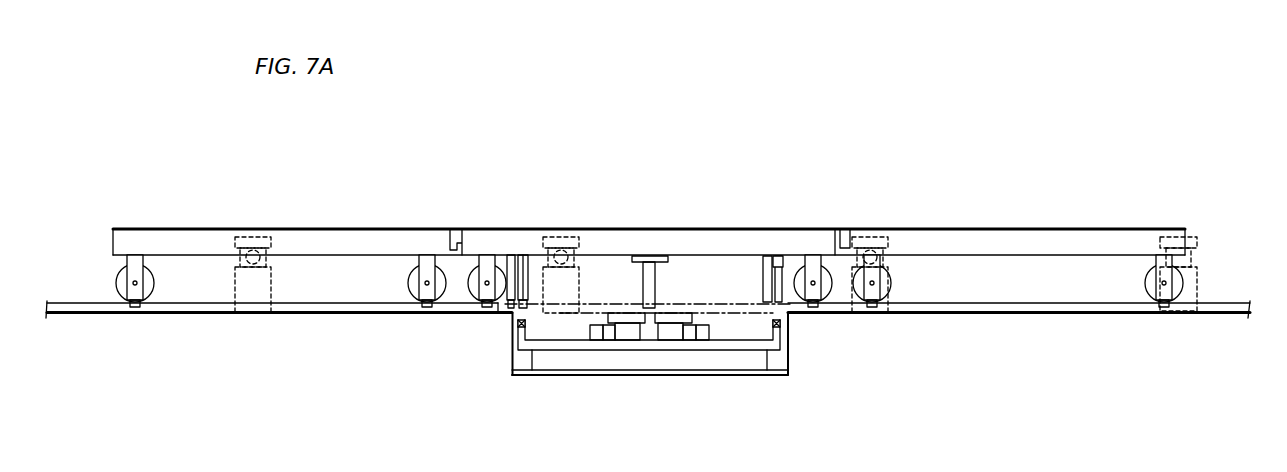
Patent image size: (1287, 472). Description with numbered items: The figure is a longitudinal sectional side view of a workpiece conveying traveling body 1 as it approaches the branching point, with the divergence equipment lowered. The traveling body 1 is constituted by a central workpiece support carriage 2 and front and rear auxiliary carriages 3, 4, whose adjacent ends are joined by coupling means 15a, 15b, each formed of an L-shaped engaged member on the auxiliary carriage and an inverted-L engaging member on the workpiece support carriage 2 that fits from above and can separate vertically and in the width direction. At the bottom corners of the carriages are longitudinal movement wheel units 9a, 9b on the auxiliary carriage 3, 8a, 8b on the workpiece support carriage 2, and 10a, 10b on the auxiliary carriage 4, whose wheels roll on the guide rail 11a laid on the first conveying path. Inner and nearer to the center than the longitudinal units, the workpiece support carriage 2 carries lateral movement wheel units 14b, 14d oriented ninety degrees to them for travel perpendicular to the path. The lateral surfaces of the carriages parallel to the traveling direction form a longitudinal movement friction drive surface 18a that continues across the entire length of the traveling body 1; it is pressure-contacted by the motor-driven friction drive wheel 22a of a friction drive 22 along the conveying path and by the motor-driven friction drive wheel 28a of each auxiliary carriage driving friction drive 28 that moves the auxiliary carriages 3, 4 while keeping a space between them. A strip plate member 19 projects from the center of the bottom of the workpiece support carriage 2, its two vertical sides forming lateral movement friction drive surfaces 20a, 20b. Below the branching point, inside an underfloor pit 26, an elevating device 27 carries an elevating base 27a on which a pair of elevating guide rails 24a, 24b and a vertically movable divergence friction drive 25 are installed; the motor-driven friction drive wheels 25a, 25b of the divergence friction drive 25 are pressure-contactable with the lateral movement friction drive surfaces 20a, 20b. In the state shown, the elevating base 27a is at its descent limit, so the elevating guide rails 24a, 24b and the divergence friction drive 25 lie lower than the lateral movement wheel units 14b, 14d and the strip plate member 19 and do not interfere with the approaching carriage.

The workpiece conveying traveling body 1 is at (729, 229).
The workpiece support carriage 2 is at (802, 229).
The auxiliary carriage 3 is at (356, 229).
The auxiliary carriage 4 is at (1013, 229).
The longitudinal movement wheel unit 8a is at (468, 302).
The longitudinal movement wheel unit 8b is at (832, 298).
The longitudinal movement wheel unit 9a is at (112, 284).
The longitudinal movement wheel unit 9b is at (407, 292).
The longitudinal movement wheel unit 10a is at (893, 285).
The longitudinal movement wheel unit 10b is at (1143, 288).
The guide rail 11a is at (215, 307).
The lateral movement wheel unit 14b is at (523, 262).
The lateral movement wheel unit 14d is at (778, 270).
The coupling means 15a is at (455, 229).
The coupling means 15b is at (840, 229).
The longitudinal movement friction drive surface 18a is at (316, 240).
The strip plate member 19 is at (657, 265).
The lateral movement friction drive surface 20a is at (643, 290).
The lateral movement friction drive surface 20b is at (655, 290).
The friction drive 22 is at (1170, 229).
The motor-driven friction drive wheel 22a is at (1195, 243).
The elevating guide rail 24a is at (517, 322).
The elevating guide rail 24b is at (783, 325).
The divergence friction drive 25 is at (650, 337).
The motor-driven friction drive wheel 25a is at (627, 318).
The motor-driven friction drive wheel 25b is at (673, 318).
The underfloor pit 26 is at (777, 365).
The elevating device 27 is at (667, 368).
The elevating base 27a is at (560, 345).
The auxiliary carriage driving friction drive 28 is at (262, 229).
The motor-driven friction drive wheel 28a is at (238, 228).